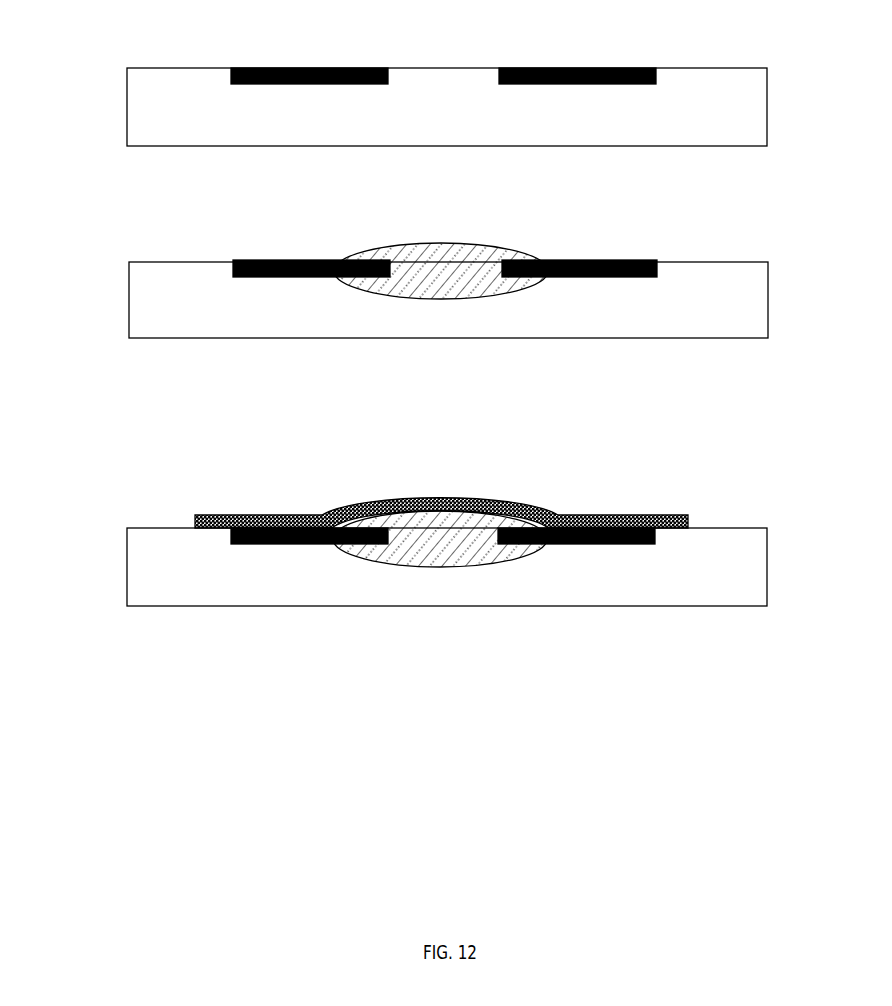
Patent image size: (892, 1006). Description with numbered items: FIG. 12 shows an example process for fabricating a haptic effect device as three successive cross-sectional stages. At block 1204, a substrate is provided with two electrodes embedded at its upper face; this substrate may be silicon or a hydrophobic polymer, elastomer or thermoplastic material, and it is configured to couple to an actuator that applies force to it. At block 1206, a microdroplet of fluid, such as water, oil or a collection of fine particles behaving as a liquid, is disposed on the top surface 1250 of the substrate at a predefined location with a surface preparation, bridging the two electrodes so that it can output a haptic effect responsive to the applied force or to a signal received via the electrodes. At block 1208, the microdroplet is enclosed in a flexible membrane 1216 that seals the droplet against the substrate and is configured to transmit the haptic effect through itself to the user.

The block 1204 is at (402, 82).
The block 1206 is at (412, 303).
The block 1208 is at (422, 578).
The flexible membrane 1216 is at (528, 508).
The top surface 1250 is at (723, 528).